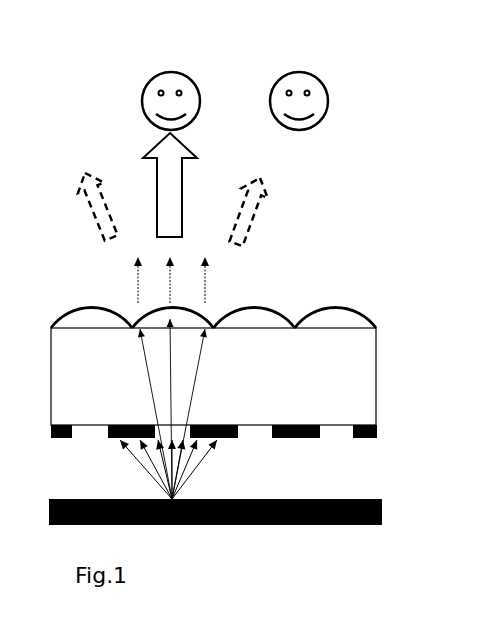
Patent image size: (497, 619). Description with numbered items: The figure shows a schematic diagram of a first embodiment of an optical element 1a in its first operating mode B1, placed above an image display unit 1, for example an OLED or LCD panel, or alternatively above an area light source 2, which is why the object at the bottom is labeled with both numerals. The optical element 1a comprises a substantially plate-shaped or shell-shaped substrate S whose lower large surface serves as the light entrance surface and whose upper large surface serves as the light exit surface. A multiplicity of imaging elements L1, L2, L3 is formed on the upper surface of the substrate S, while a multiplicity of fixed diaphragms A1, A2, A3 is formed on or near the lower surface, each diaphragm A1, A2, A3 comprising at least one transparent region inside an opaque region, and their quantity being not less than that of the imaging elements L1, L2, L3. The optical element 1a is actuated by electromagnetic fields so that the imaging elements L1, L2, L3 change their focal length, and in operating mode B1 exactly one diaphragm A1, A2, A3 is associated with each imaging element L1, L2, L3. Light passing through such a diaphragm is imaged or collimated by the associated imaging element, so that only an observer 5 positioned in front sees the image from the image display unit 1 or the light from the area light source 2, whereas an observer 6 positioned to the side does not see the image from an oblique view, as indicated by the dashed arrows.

The image display unit 1 is at (249, 512).
The area light source 2 is at (249, 512).
The optical element 1a is at (257, 281).
The observer 5 is at (171, 85).
The observer 6 is at (299, 85).
The operating mode B1 is at (172, 154).
The imaging element L1 is at (202, 317).
The imaging element L2 is at (268, 303).
The imaging element L3 is at (343, 303).
The substrate S is at (213, 376).
The diaphragm A1 is at (196, 441).
The diaphragm A2 is at (253, 438).
The diaphragm A3 is at (335, 438).